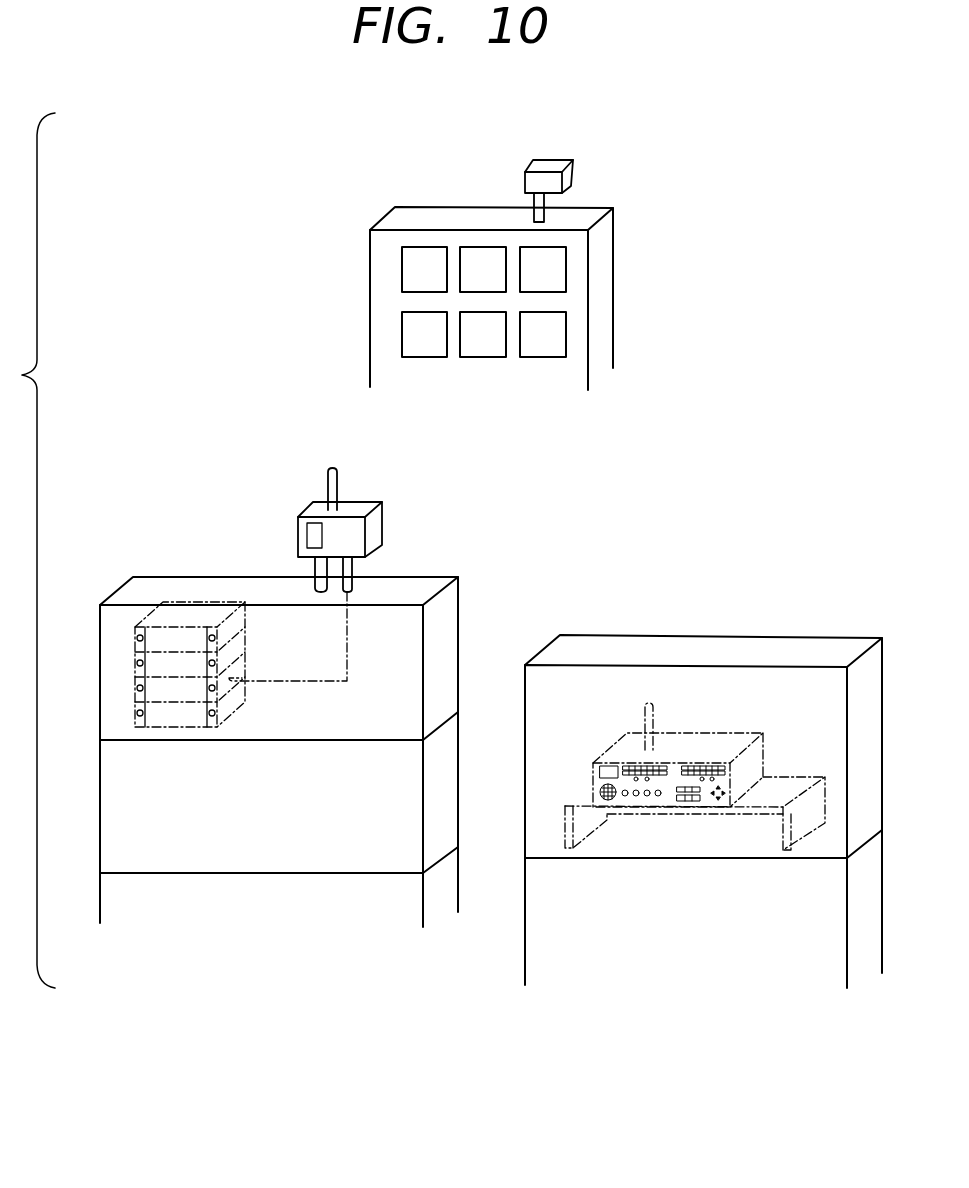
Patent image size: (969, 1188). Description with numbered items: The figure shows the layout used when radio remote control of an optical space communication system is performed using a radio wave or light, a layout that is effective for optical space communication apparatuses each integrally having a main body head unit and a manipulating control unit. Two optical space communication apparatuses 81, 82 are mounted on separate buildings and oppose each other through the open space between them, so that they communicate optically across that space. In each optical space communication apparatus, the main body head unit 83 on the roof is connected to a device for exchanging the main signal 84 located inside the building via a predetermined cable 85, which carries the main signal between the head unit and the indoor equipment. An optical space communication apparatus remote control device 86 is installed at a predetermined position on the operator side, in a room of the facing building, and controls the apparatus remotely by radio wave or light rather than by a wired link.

The optical space communication apparatus 81 is at (222, 534).
The optical space communication apparatus 82 is at (553, 163).
The main body head unit 83 is at (323, 507).
The device for exchanging the main signal 84 is at (172, 613).
The predetermined cable 85 is at (352, 568).
The optical space communication apparatus remote control device 86 is at (734, 737).